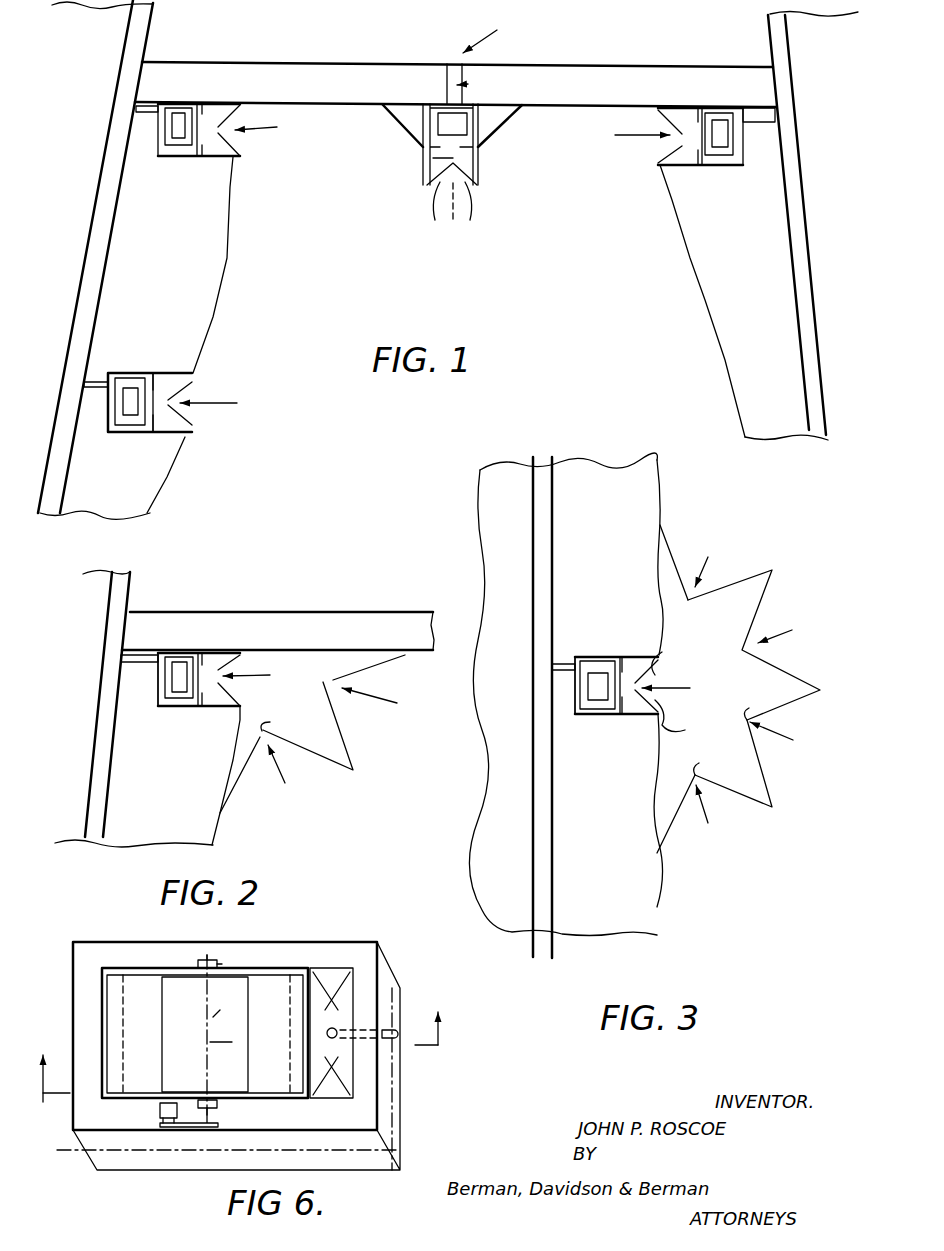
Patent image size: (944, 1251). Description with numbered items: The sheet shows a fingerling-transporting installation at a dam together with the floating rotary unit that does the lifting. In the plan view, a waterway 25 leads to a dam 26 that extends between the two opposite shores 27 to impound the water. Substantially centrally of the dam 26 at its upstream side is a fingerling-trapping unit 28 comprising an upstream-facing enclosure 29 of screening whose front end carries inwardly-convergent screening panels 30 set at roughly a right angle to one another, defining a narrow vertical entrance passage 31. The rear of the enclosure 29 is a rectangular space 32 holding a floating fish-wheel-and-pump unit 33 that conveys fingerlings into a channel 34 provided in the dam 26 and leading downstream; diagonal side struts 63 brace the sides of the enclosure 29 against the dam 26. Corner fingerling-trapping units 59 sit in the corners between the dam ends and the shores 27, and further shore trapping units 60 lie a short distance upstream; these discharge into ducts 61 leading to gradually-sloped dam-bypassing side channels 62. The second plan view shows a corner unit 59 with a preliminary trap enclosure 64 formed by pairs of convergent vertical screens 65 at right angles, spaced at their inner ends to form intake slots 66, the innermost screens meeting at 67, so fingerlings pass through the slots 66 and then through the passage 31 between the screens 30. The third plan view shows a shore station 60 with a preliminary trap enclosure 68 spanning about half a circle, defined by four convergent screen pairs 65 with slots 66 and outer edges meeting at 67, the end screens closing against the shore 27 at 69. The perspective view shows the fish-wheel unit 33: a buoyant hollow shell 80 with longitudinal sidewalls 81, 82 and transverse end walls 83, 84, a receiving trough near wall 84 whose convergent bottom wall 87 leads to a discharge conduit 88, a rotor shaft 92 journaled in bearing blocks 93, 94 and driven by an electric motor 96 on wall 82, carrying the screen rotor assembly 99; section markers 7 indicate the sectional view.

In FIG. 6, the section line 7- 7 is at (243, 1044).
In FIG. 1, the waterway 25 is at (494, 34).
In FIG. 1, the dam 26 is at (568, 78).
In FIG. 2, the dam 26 is at (387, 623).
In FIG. 1, the shore 27 is at (165, 279).
In FIG. 2, the shore 27 is at (175, 807).
In FIG. 3, the shore 27 is at (625, 544).
In FIG. 1, the fingerling-trapping unit 28 is at (480, 190).
In FIG. 1, the upstream-facing enclosure 29 is at (210, 160).
In FIG. 2, the upstream-facing enclosure 29 is at (203, 707).
In FIG. 3, the upstream-facing enclosure 29 is at (631, 657).
In FIG. 1, the screening panel 30 is at (250, 141).
In FIG. 2, the screening panel 30 is at (240, 672).
In FIG. 3, the screening panel 30 is at (665, 660).
In FIG. 1, the entrance passage 31 is at (432, 159).
In FIG. 2, the entrance passage 31 is at (213, 675).
In FIG. 1, the rectangular space 32 is at (432, 106).
In FIG. 1, the fish-wheel-and-pump unit 33 is at (478, 104).
In FIG. 2, the fish-wheel-and-pump unit 33 is at (172, 657).
In FIG. 3, the fish-wheel-and-pump unit 33 is at (597, 709).
In FIG. 6, the fish-wheel-and-pump unit 33 is at (378, 941).
In FIG. 1, the channel 34 is at (476, 83).
In FIG. 1, the corner fingerling-trapping unit 59 is at (245, 158).
In FIG. 2, the corner fingerling-trapping unit 59 is at (248, 708).
In FIG. 1, the shore fingerling-trapping unit 60 is at (197, 378).
In FIG. 3, the shore fingerling-trapping unit 60 is at (670, 652).
In FIG. 1, the duct 61 is at (140, 120).
In FIG. 2, the duct 61 is at (138, 663).
In FIG. 3, the duct 61 is at (561, 663).
In FIG. 1, the side channel 62 is at (113, 222).
In FIG. 2, the side channel 62 is at (134, 708).
In FIG. 3, the side channel 62 is at (548, 535).
In FIG. 1, the diagonal side strut 63 is at (392, 122).
In FIG. 2, the preliminary trap enclosure 64 is at (320, 665).
In FIG. 2, the convergent vertical screen 65 is at (387, 667).
In FIG. 3, the convergent vertical screen 65 is at (752, 795).
In FIG. 2, the intake slot 66 is at (283, 724).
In FIG. 3, the intake slot 66 is at (746, 724).
In FIG. 2, the screen meeting point 67 is at (355, 770).
In FIG. 3, the screen meeting point 67 is at (775, 807).
In FIG. 3, the preliminary trap enclosure 68 is at (733, 699).
In FIG. 3, the screen closing point 69 is at (661, 526).
In FIG. 6, the buoyant hollow shell 80 is at (302, 948).
In FIG. 6, the longitudinal sidewall 81 is at (168, 948).
In FIG. 6, the longitudinal sidewall 82 is at (273, 1120).
In FIG. 6, the transverse end wall 83 is at (87, 997).
In FIG. 6, the transverse end wall 84 is at (365, 998).
In FIG. 6, the bottom wall 87 is at (335, 995).
In FIG. 6, the discharge conduit 88 is at (391, 1043).
In FIG. 6, the rotor shaft 92 is at (227, 1035).
In FIG. 6, the bearing block 93 is at (218, 1105).
In FIG. 6, the bearing block 94 is at (222, 962).
In FIG. 6, the electric driving motor 96 is at (160, 1108).
In FIG. 6, the rotor assembly 99 is at (272, 975).